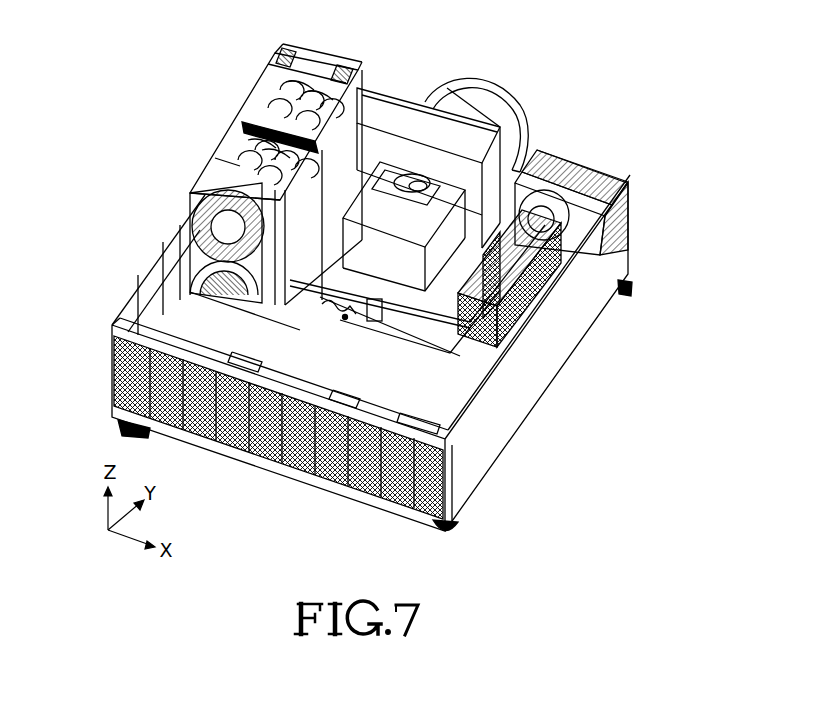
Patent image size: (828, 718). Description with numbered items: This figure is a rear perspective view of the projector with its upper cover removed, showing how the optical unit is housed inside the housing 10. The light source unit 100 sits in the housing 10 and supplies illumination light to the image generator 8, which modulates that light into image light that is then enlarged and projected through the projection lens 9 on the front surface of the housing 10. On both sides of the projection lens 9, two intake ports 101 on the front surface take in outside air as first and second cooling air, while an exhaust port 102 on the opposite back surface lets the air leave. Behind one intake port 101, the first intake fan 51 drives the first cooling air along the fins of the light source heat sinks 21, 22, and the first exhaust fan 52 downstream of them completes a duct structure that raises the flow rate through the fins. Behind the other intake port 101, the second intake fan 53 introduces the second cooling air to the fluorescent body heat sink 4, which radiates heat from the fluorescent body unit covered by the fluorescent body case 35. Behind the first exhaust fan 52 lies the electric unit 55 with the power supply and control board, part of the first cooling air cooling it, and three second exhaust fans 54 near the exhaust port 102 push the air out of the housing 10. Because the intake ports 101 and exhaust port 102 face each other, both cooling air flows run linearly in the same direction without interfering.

The fluorescent body heat sink 4 is at (548, 291).
The image generator 8 is at (453, 393).
The projection lens 9 is at (442, 140).
The housing 10 is at (470, 300).
The light source heat sink 21 is at (215, 151).
The light source heat sink 22 is at (276, 176).
The fluorescent body case 35 is at (373, 340).
The first intake fan 51 is at (321, 58).
The first exhaust fan 52 is at (200, 218).
The second intake fan 53 is at (596, 184).
The second exhaust fan 54 is at (459, 460).
The electric unit 55 is at (228, 323).
The light source unit 100 is at (427, 378).
The intake port 101 is at (574, 152).
The exhaust port 102 is at (278, 442).